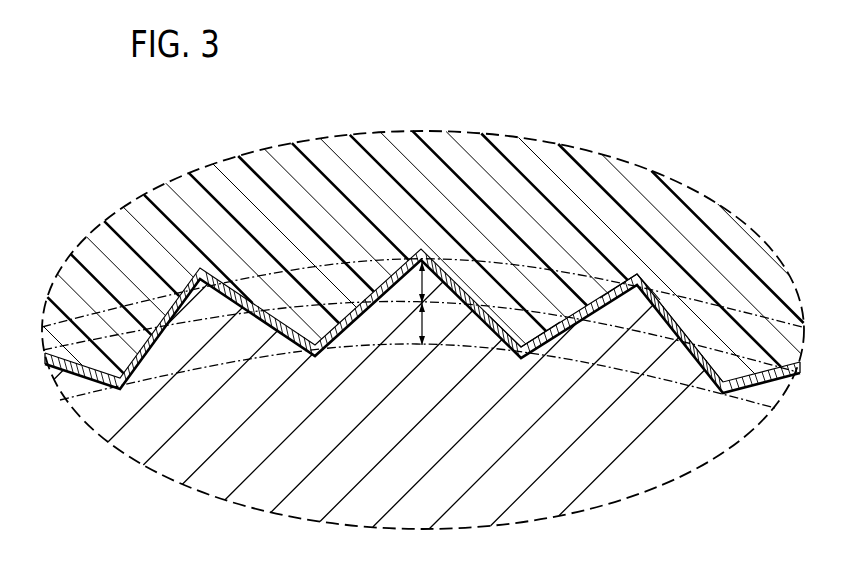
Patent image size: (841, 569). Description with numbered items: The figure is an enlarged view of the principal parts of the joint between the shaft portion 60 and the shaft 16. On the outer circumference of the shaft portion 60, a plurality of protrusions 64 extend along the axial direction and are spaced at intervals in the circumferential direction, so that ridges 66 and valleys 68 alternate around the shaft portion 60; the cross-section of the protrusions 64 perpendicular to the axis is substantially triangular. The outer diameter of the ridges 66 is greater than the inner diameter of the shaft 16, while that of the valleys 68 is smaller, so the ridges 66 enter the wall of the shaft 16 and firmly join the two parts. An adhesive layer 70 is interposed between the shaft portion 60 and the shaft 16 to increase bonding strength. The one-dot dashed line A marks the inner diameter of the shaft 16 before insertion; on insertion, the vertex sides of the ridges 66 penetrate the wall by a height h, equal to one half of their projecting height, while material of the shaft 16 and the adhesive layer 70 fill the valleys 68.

The shaft 16 is at (342, 172).
The shaft portion 60 is at (622, 473).
The protrusions 64 is at (626, 274).
The ridges 66 is at (641, 279).
The valleys 68 is at (522, 346).
The adhesive layer 70 is at (678, 318).
The one-dot dashed line A is at (751, 360).
The height h is at (427, 303).